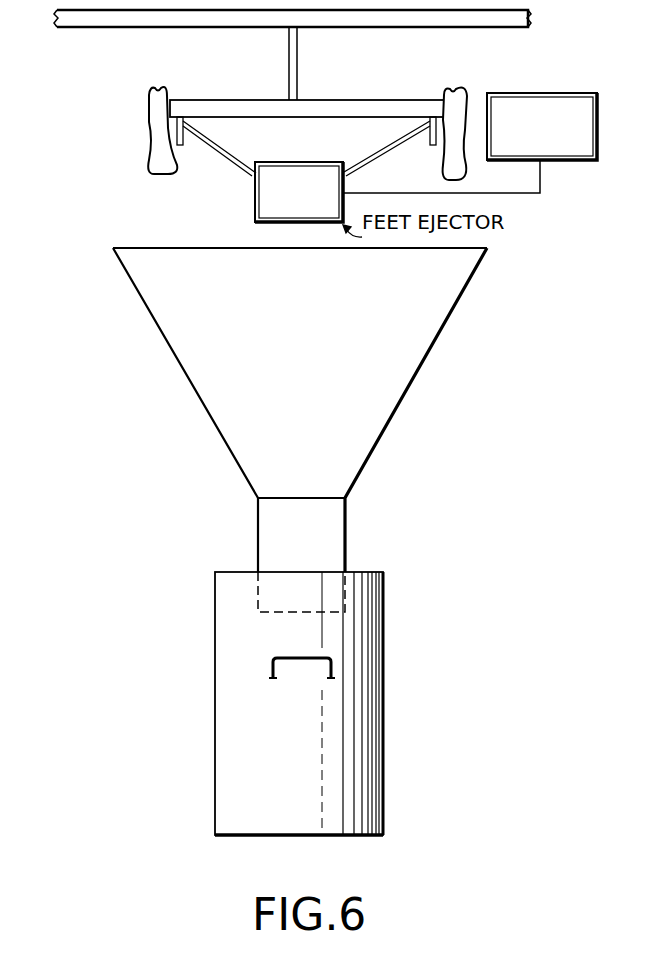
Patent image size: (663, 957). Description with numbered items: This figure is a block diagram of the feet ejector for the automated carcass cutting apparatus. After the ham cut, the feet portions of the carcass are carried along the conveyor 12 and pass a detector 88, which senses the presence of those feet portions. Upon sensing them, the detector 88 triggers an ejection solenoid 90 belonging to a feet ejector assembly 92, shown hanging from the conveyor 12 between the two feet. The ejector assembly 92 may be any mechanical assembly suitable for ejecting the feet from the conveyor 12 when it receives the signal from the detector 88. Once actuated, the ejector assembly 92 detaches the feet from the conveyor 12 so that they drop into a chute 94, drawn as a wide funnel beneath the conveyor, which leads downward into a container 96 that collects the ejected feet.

The conveyor 12 is at (388, 27).
The detector 88 is at (574, 162).
The ejection solenoid 90 is at (311, 202).
The feet ejector assembly 92 is at (240, 150).
The chute 94 is at (312, 374).
The container 96 is at (383, 670).